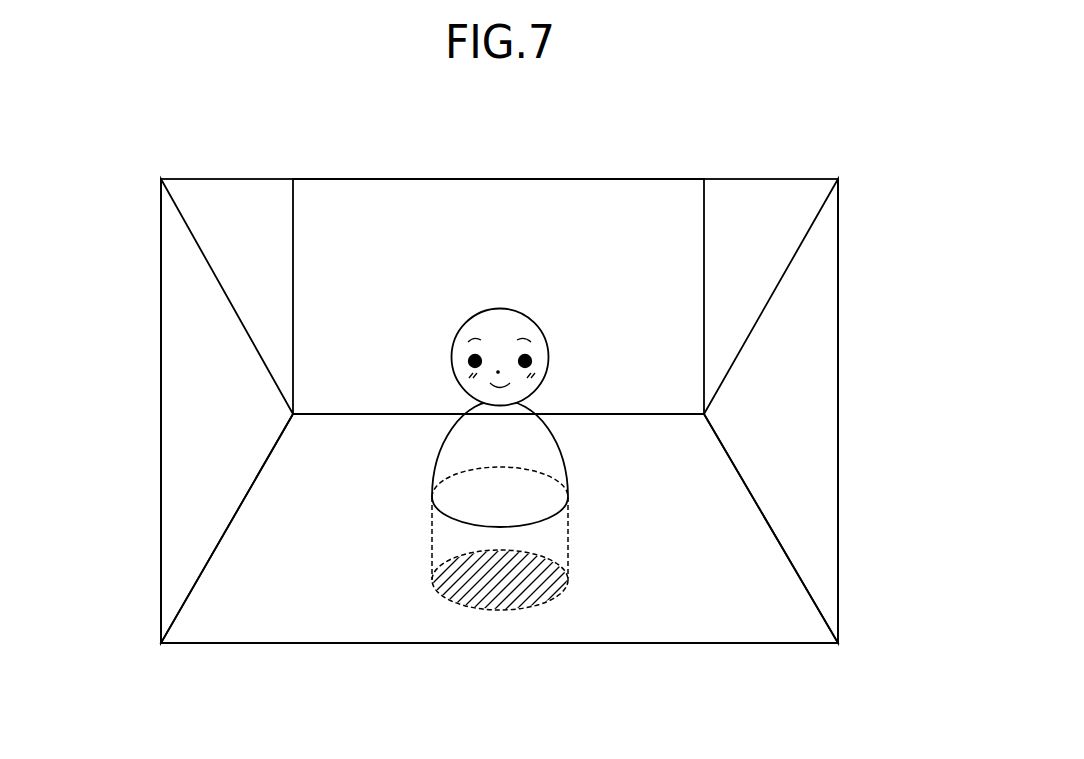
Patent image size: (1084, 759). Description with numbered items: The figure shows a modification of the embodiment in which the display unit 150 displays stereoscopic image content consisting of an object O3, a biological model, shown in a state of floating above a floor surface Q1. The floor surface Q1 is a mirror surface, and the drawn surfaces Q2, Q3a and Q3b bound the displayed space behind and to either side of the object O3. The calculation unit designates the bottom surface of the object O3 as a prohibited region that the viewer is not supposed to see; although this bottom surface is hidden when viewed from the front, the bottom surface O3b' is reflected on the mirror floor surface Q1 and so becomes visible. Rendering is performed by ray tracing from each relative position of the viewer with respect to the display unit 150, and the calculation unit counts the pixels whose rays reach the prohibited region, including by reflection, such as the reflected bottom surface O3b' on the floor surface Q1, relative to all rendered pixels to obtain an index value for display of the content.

The display unit 150 is at (500, 397).
The floor surface Q1 is at (629, 577).
The back wall region Q2 is at (343, 245).
The left side wall region Q3a is at (227, 359).
The right side wall region Q3b is at (776, 357).
The object O3 is at (513, 412).
The bottom surface of the object O3b' is at (513, 617).